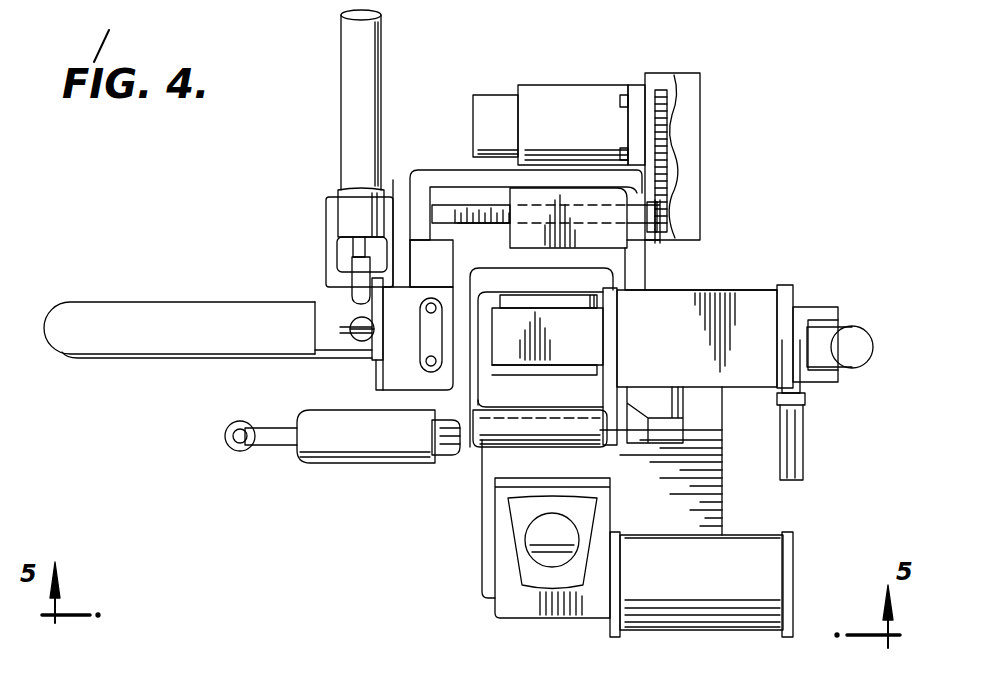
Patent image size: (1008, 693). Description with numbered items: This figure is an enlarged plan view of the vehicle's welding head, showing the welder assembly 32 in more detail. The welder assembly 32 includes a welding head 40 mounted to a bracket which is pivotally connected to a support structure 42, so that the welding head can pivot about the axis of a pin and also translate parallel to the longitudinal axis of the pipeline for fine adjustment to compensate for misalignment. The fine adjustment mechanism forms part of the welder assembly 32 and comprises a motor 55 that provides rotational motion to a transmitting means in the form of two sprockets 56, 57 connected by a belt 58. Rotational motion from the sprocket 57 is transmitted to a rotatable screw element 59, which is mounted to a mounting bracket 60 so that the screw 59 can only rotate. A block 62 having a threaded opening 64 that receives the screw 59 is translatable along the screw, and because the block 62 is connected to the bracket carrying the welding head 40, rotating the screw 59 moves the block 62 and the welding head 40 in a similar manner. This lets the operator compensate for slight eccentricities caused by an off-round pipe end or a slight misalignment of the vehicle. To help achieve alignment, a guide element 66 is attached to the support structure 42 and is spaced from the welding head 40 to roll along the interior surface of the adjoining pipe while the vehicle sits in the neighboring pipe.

The welder assembly 32 is at (311, 272).
The welding head 40 is at (352, 446).
The support structure 42 is at (698, 522).
The motor 55 is at (553, 100).
The sprocket 56 is at (664, 127).
The sprocket 57 is at (663, 212).
The belt 58 is at (665, 185).
The rotatable screw element 59 is at (458, 212).
The mounting bracket 60 is at (417, 190).
The block 62 is at (600, 237).
The threaded opening 64 is at (528, 216).
The guide element 66 is at (150, 322).